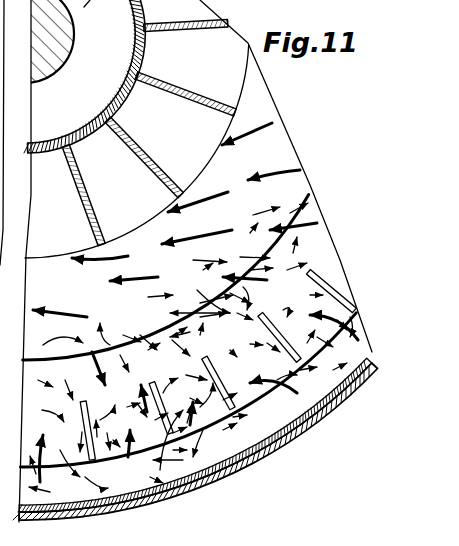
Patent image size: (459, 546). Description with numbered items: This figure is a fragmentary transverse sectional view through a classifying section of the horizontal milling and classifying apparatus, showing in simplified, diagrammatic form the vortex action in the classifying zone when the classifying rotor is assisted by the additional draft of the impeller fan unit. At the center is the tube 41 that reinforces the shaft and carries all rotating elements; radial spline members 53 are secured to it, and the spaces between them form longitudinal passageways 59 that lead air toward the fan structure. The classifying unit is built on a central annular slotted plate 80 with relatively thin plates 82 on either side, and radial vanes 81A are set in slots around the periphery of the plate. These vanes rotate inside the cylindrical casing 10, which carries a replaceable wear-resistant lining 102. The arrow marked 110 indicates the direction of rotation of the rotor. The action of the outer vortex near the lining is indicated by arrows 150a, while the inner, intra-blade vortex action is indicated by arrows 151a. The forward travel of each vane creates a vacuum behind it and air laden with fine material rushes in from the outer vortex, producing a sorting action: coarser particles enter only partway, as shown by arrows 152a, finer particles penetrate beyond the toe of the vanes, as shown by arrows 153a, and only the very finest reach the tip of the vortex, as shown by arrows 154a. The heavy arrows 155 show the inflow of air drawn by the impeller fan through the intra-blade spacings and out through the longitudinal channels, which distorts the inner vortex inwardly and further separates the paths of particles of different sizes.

The cylindrical casing 10 is at (277, 451).
The tube 41 is at (110, 100).
The radial spline member 53 is at (198, 108).
The longitudinal passageway 59 is at (213, 73).
The central annular slotted plate 80 is at (327, 253).
The radial vane 81A is at (350, 297).
The thin plate 82 is at (86, 302).
The replaceable lining 102 is at (377, 360).
The rotation direction arrow 110 is at (92, 56).
The outer vortex arrows 150a is at (313, 422).
The inner vortex arrows 151a is at (340, 397).
The coarse particle path arrows 152a is at (309, 295).
The fine particle path arrows 153a is at (245, 252).
The finest particle path arrows 154a is at (262, 206).
The heavy arrows 155 is at (230, 180).